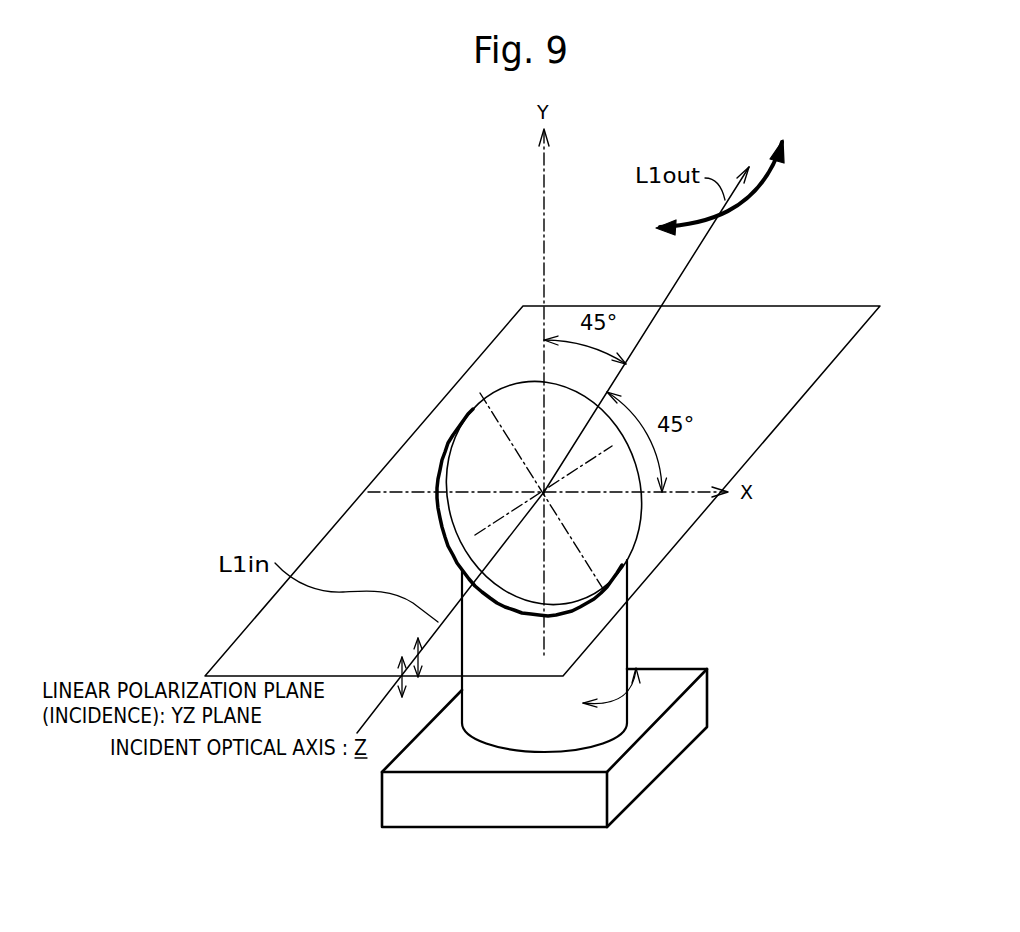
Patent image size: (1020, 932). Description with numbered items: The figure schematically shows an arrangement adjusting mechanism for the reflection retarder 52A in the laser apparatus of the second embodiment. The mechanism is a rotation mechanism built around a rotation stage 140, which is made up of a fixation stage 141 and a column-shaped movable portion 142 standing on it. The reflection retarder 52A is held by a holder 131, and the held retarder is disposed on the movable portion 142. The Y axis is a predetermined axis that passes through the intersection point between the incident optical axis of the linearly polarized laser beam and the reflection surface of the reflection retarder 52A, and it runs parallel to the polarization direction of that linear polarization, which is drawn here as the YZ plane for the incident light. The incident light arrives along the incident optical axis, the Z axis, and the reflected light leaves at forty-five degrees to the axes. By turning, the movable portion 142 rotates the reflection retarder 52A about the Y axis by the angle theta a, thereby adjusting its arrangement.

The reflection retarder 52A is at (476, 430).
The holder 131 is at (432, 462).
The rotation stage 140 is at (612, 726).
The fixation stage 141 is at (497, 830).
The movable portion 142 is at (628, 628).